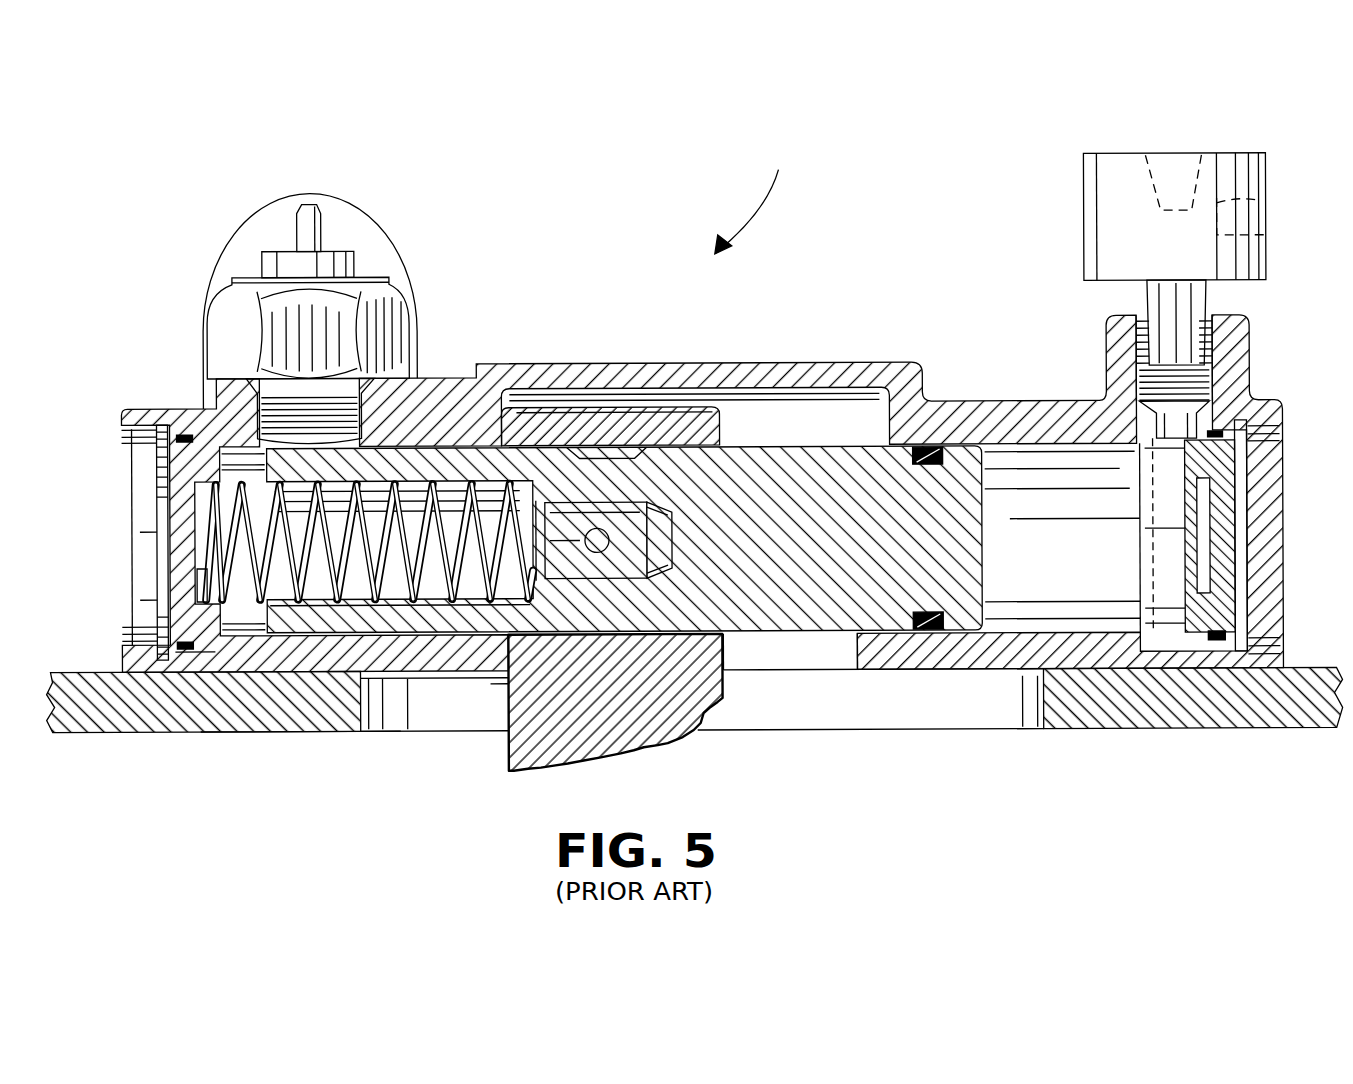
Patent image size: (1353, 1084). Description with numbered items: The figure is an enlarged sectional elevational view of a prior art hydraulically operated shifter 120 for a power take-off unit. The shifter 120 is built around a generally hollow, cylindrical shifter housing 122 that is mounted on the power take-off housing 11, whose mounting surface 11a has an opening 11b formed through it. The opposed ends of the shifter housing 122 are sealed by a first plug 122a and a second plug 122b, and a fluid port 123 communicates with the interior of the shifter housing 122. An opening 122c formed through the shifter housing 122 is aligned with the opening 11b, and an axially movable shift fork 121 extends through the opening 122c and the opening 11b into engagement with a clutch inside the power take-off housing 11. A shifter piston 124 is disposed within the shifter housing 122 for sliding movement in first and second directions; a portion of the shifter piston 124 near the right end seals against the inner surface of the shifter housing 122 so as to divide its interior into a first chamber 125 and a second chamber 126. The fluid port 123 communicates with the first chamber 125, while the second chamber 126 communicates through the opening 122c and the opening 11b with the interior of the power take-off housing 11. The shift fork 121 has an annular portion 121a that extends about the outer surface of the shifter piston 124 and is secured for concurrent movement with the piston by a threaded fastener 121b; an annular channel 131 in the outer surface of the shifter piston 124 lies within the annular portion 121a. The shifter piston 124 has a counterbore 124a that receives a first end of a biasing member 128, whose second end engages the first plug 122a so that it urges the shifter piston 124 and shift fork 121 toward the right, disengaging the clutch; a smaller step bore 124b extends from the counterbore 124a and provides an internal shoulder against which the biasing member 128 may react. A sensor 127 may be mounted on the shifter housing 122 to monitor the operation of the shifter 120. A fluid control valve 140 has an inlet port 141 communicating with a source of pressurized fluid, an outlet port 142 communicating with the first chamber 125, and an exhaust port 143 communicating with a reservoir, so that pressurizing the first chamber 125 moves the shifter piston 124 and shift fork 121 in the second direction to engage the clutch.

The power take-off housing 11 is at (694, 763).
The mounting surface 11a is at (313, 733).
The opening 11b is at (1040, 695).
The hydraulically operated shifter 120 is at (763, 199).
The shift fork 121 is at (691, 537).
The annular portion 121a is at (583, 420).
The threaded fastener 121b is at (590, 528).
The shifter housing 122 is at (702, 540).
The first plug 122a is at (197, 623).
The second plug 122b is at (1207, 630).
The opening 122c is at (878, 650).
The fluid port 123 is at (1180, 423).
The shifter piston 124 is at (624, 552).
The counterbore 124a is at (390, 593).
The step bore 124b is at (590, 563).
The first chamber 125 is at (1033, 581).
The second chamber 126 is at (837, 437).
The nut 127 is at (357, 262).
The biasing member 128 is at (193, 500).
The annular channel 131 is at (618, 450).
The fluid control valve 140 is at (1146, 191).
The inlet port 141 is at (1157, 173).
The outlet port 142 is at (1103, 354).
The exhaust port 143 is at (1267, 218).